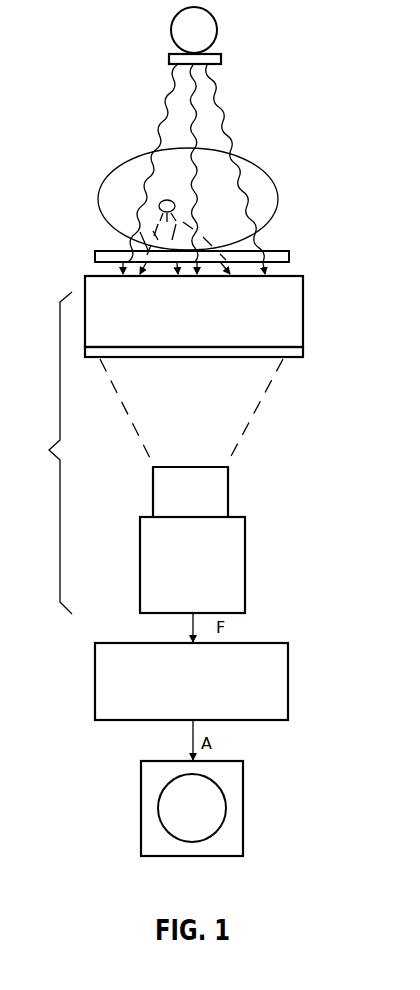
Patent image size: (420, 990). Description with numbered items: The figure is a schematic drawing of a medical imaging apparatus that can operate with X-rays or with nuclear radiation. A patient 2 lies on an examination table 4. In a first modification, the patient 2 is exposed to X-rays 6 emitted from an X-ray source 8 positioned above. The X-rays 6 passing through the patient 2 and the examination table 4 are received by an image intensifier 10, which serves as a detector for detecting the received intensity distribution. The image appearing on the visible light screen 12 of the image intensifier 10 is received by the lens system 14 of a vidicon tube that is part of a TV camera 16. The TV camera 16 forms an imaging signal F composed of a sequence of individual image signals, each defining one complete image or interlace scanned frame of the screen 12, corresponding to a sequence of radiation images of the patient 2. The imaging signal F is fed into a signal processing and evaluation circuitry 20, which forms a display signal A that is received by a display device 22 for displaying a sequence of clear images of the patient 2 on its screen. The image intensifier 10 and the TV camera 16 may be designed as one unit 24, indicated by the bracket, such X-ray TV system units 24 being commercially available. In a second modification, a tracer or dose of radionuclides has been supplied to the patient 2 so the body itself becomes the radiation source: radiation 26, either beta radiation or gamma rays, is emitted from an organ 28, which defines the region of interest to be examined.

The patient 2 is at (257, 202).
The examination table 4 is at (290, 257).
The X-rays 6 is at (205, 122).
The X-ray source 8 is at (210, 28).
The image intensifier 10 is at (292, 304).
The visible light screen 12 is at (292, 355).
The lens system 14 is at (218, 493).
The TV camera 16 is at (233, 571).
The signal processing and evaluation circuitry 20 is at (282, 665).
The display device 22 is at (233, 802).
The unit 24 is at (43, 453).
The radiation 26 is at (165, 238).
The organ 28 is at (160, 205).